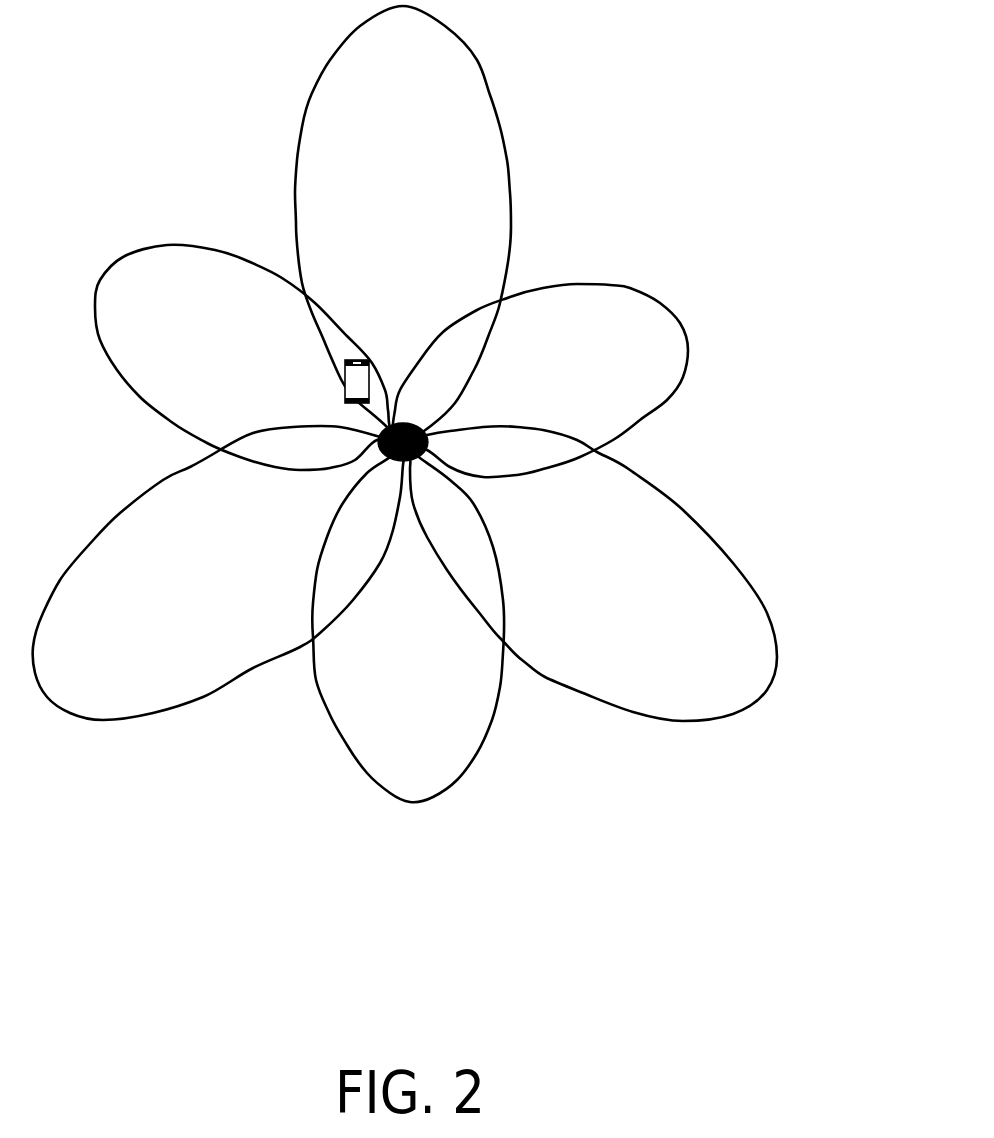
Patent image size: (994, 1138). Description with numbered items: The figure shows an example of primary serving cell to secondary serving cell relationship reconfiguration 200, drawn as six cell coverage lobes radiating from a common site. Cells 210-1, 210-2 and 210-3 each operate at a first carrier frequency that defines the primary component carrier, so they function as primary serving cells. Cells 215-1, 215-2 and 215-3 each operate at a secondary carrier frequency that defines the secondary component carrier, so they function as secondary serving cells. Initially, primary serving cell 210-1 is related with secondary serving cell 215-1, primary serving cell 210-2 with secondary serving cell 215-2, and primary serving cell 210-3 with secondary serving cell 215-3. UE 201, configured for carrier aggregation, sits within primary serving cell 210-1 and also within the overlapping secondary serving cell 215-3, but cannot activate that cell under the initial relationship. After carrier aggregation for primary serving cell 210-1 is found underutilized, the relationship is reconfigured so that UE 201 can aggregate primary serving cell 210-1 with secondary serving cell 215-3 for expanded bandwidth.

The primary serving cell to secondary serving cell relationship reconfiguration exam 200 is at (820, 696).
The UE 201 is at (345, 365).
The primary serving cell 210-1 is at (432, 94).
The primary serving cell 210-2 is at (710, 670).
The primary serving cell 210-3 is at (117, 678).
The secondary serving cell 215-1 is at (621, 358).
The secondary serving cell 215-2 is at (438, 710).
The secondary serving cell 215-3 is at (180, 319).